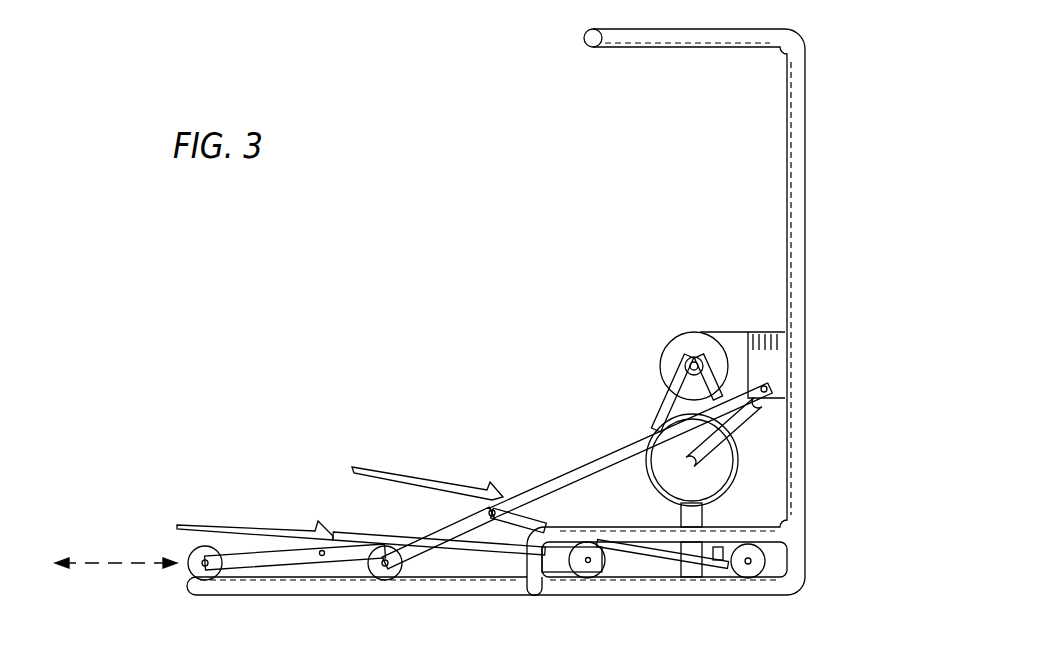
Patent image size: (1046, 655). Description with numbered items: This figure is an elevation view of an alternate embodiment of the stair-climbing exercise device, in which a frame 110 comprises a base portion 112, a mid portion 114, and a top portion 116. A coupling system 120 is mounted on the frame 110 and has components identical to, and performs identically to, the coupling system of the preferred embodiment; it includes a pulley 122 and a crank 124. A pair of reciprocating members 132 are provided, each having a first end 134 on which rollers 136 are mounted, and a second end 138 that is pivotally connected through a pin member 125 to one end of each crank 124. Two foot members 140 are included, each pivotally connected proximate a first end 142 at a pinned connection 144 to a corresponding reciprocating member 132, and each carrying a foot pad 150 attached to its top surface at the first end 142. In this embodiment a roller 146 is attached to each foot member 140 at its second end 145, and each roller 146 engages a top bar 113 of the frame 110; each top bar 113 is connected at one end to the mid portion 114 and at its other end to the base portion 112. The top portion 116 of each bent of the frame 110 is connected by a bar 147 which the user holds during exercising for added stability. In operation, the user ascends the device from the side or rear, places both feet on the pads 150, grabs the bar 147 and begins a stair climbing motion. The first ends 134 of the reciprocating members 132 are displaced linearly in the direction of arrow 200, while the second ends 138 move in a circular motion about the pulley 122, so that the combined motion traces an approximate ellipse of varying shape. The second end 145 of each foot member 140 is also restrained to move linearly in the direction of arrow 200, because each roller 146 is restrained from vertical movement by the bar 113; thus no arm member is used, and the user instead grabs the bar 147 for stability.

The frame 110 is at (808, 295).
The base portion 112 is at (603, 597).
The top bar 113 is at (775, 530).
The mid portion 114 is at (805, 203).
The top portion 116 is at (692, 47).
The coupling system 120 is at (748, 463).
The pulley 122 is at (648, 445).
The crank 124 is at (760, 423).
The pin member 125 is at (770, 387).
The reciprocating member 132 is at (303, 556).
The first end 134 is at (235, 569).
The roller 136 is at (190, 571).
The second end 138 is at (750, 395).
The foot member 140 is at (552, 512).
The first end 142 is at (457, 492).
The pinned connection 144 is at (492, 506).
The second end 145 is at (717, 553).
The roller 146 is at (752, 570).
The bar 147 is at (585, 41).
The foot pad 150 is at (256, 525).
The arrow 200 is at (82, 560).